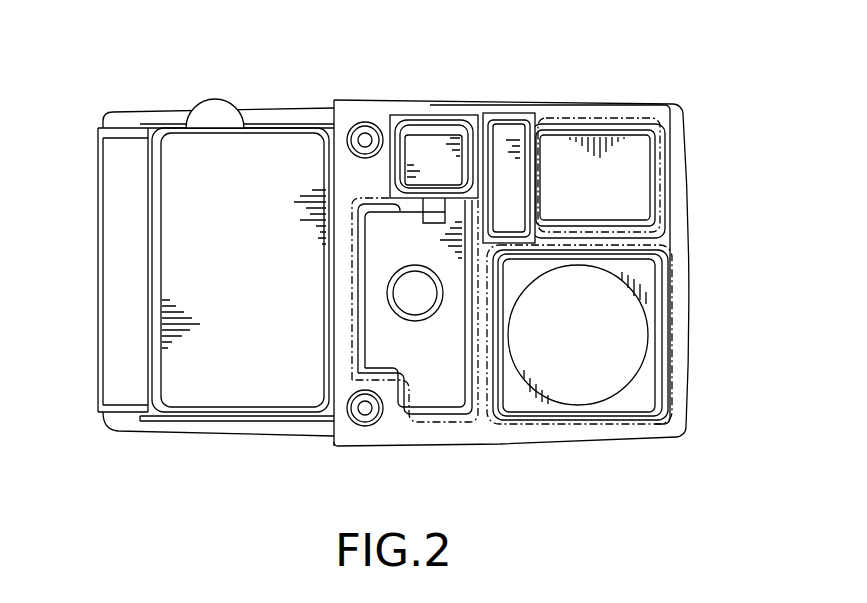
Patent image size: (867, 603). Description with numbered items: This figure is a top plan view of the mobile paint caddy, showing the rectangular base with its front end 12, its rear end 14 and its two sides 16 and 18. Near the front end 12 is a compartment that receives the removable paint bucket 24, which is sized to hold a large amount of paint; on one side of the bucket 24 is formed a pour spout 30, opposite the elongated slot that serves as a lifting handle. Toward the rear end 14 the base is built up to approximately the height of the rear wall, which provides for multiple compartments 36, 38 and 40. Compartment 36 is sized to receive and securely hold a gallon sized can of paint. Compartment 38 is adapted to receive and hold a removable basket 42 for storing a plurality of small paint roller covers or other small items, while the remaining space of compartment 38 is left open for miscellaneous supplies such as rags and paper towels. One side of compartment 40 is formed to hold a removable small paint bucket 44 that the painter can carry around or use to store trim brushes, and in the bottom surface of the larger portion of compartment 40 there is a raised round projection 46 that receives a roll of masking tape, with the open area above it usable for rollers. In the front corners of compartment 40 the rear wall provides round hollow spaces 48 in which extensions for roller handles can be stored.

The front end 12 is at (98, 273).
The rear end 14 is at (692, 253).
The side 16 is at (635, 439).
The side 18 is at (430, 100).
The removable paint bucket 24 is at (180, 363).
The pour spout 30 is at (216, 98).
The compartment 36 is at (607, 322).
The compartment 38 is at (635, 170).
The compartment 40 is at (445, 335).
The removable basket 42 is at (511, 136).
The removable small paint bucket 44 is at (437, 143).
The raised round projection 46 is at (413, 292).
The round hollow spaces 48 is at (365, 133).